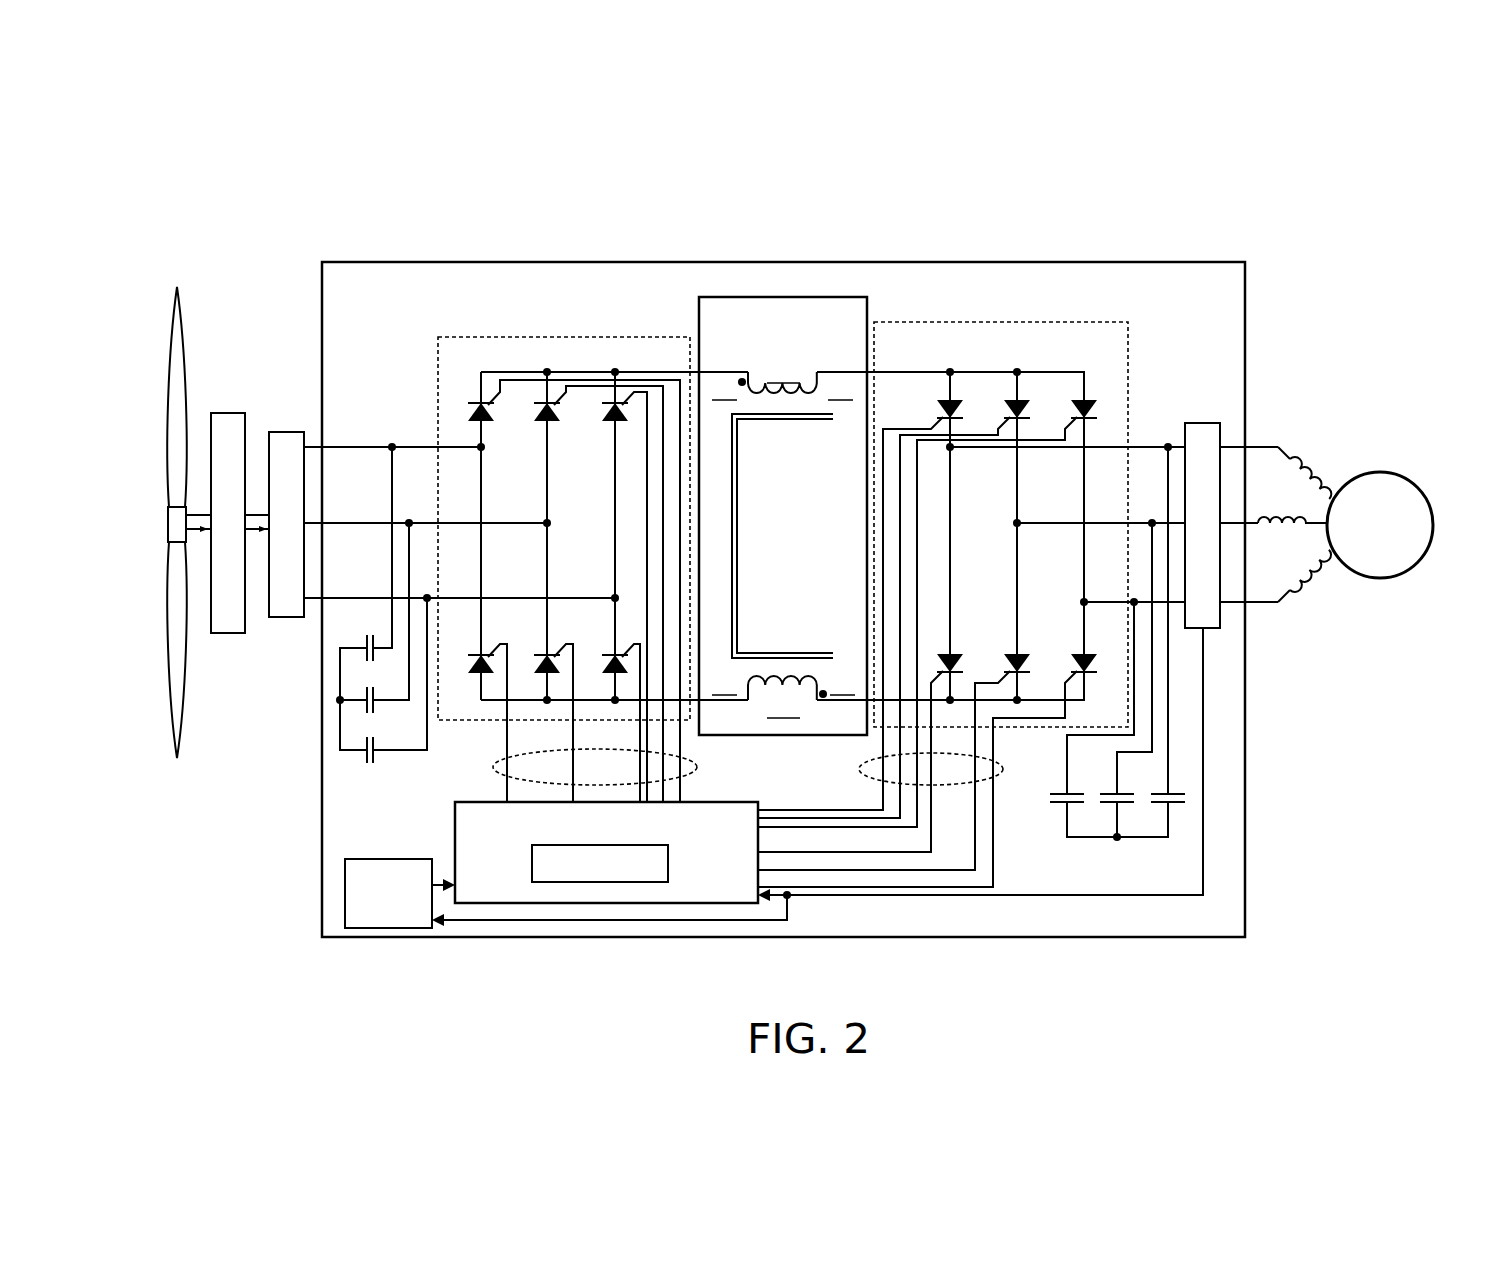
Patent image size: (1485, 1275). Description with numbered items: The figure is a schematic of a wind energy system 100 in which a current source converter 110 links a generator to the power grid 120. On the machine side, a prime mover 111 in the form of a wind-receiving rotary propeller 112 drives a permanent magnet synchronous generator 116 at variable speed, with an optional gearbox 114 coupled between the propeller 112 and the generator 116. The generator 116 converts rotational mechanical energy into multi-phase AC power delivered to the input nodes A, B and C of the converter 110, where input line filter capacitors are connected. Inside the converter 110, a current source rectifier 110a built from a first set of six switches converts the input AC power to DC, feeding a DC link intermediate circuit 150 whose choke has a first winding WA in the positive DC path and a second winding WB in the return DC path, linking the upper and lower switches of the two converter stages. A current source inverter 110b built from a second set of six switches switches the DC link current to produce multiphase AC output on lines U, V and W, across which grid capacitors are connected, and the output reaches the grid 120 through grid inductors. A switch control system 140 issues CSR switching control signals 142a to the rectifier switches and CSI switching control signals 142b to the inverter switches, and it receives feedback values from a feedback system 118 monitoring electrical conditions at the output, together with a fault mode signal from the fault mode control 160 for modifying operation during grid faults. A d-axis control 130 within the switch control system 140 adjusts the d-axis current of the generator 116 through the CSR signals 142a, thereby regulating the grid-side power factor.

The wind energy system 100 is at (246, 225).
The current source converter 110 is at (322, 292).
The current source rectifier 110a is at (438, 358).
The current source inverter 110b is at (1128, 343).
The prime mover 111 is at (213, 752).
The rotary propeller 112 is at (187, 325).
The gearbox 114 is at (237, 413).
The permanent magnet synchronous generator 116 is at (298, 432).
The feedback system 118 is at (1203, 422).
The grid 120 is at (1395, 551).
The d-axis control 130 is at (652, 873).
The switch control system 140 is at (579, 852).
The CSR switching control signals 142a is at (493, 767).
The CSI switching control signals 142b is at (860, 767).
The DC link intermediate circuit 150 is at (699, 323).
The fault mode control 160 is at (345, 895).